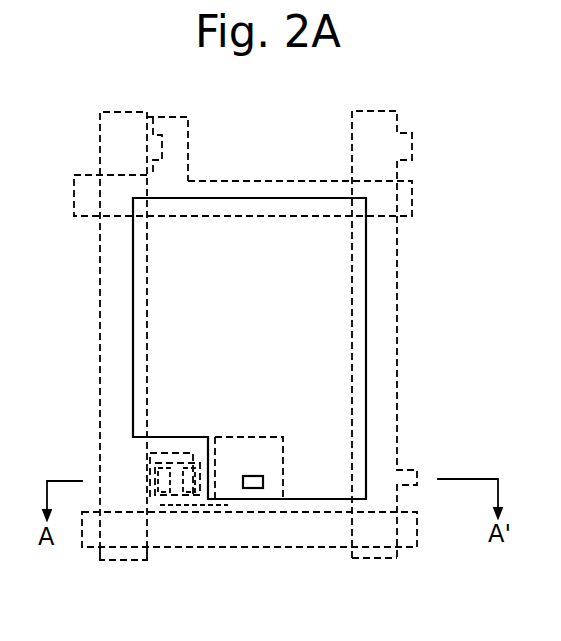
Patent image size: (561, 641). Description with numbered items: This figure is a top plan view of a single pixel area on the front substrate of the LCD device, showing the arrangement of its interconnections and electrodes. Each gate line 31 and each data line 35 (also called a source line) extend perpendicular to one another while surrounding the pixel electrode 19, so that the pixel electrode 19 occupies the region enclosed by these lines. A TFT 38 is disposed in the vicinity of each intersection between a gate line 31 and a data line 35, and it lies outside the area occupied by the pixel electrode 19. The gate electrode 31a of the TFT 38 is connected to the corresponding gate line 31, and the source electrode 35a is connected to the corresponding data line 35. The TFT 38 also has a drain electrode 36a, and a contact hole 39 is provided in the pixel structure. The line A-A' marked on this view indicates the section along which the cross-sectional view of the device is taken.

The pixel electrode 19 is at (360, 245).
The data line 35 is at (100, 322).
The gate line 31 is at (408, 552).
The gate electrode 31a is at (150, 453).
The source electrode 35a is at (146, 480).
The drain electrode 36a is at (225, 500).
The TFT 38 is at (177, 497).
The contact hole 39 is at (250, 475).